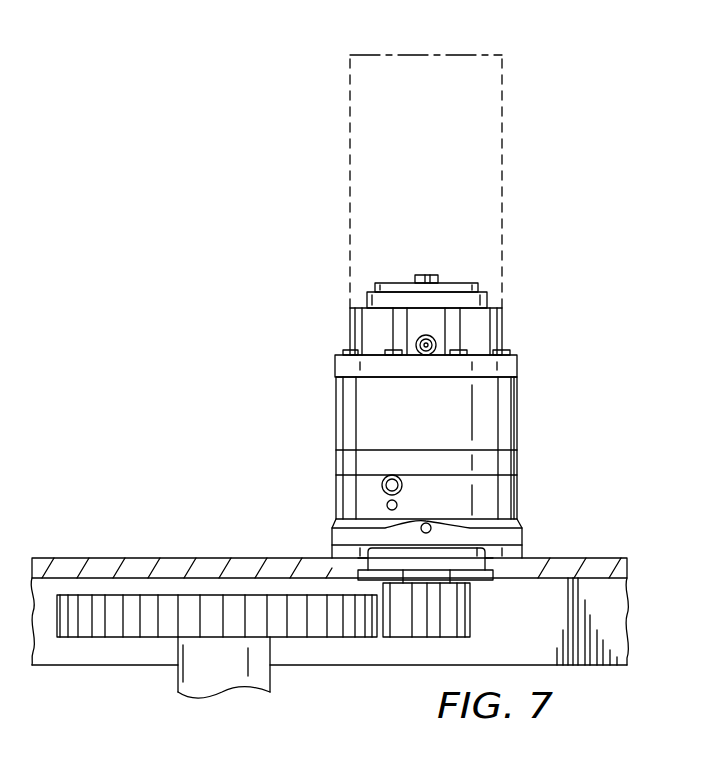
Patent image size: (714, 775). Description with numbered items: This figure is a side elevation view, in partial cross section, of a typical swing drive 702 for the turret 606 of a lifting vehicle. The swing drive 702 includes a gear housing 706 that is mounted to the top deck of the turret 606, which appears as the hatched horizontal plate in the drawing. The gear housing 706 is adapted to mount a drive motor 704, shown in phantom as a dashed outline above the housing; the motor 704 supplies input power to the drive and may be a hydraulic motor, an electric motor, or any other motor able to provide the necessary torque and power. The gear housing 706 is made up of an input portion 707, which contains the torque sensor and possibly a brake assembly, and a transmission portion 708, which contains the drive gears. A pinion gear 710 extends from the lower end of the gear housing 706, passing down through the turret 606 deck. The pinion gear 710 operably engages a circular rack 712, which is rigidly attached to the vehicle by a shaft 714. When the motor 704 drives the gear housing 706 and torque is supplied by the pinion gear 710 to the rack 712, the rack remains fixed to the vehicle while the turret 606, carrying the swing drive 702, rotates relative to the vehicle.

The swing drive 702 is at (188, 312).
The drive motor 704 is at (481, 146).
The gear housing 706 is at (528, 413).
The input portion 707 is at (350, 330).
The transmission portion 708 is at (336, 422).
The turret 606 is at (570, 557).
The pinion gear 710 is at (472, 606).
The circular rack 712 is at (137, 638).
The shaft 714 is at (272, 680).